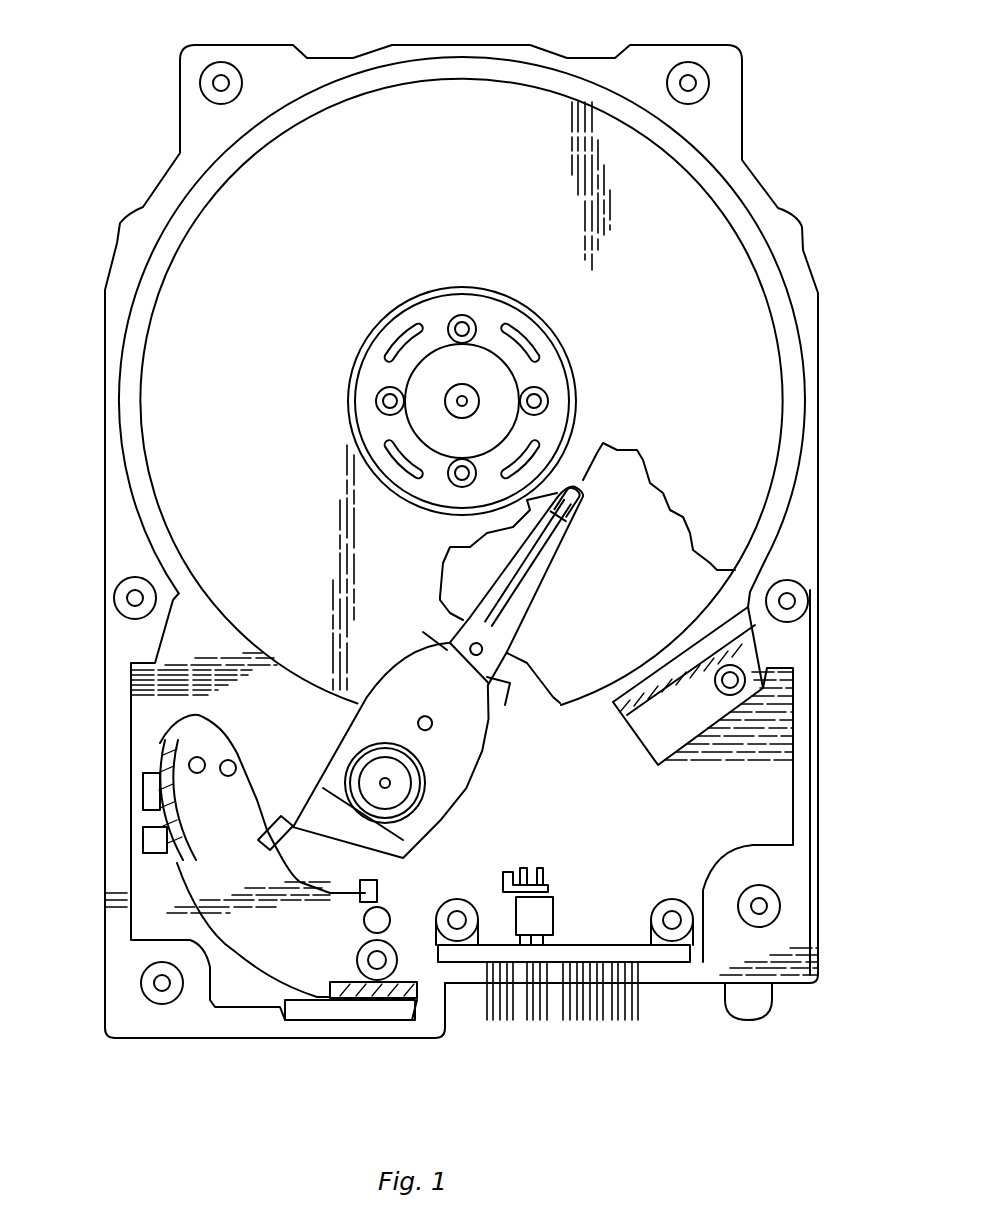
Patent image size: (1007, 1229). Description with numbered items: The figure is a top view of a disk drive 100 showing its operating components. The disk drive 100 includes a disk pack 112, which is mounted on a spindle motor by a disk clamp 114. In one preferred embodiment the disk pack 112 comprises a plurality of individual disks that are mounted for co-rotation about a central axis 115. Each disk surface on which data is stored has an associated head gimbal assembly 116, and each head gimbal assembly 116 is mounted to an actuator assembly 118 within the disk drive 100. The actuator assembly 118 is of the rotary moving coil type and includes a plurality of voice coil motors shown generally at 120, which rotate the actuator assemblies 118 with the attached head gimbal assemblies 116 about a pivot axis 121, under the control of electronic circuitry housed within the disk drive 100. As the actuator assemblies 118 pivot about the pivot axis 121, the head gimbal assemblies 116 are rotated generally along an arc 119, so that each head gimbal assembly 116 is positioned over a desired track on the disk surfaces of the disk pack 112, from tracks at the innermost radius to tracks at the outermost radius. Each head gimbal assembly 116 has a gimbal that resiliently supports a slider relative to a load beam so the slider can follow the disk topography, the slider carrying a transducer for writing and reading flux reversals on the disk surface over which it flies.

The disk drive 100 is at (797, 88).
The disk pack 112 is at (497, 184).
The disk clamp 114 is at (384, 312).
The central axis 115 is at (462, 401).
The head gimbal assembly 116 is at (578, 481).
The actuator assembly 118 is at (508, 664).
The arc 119 is at (527, 527).
The voice coil motors 120 is at (230, 880).
The pivot axis 121 is at (385, 783).